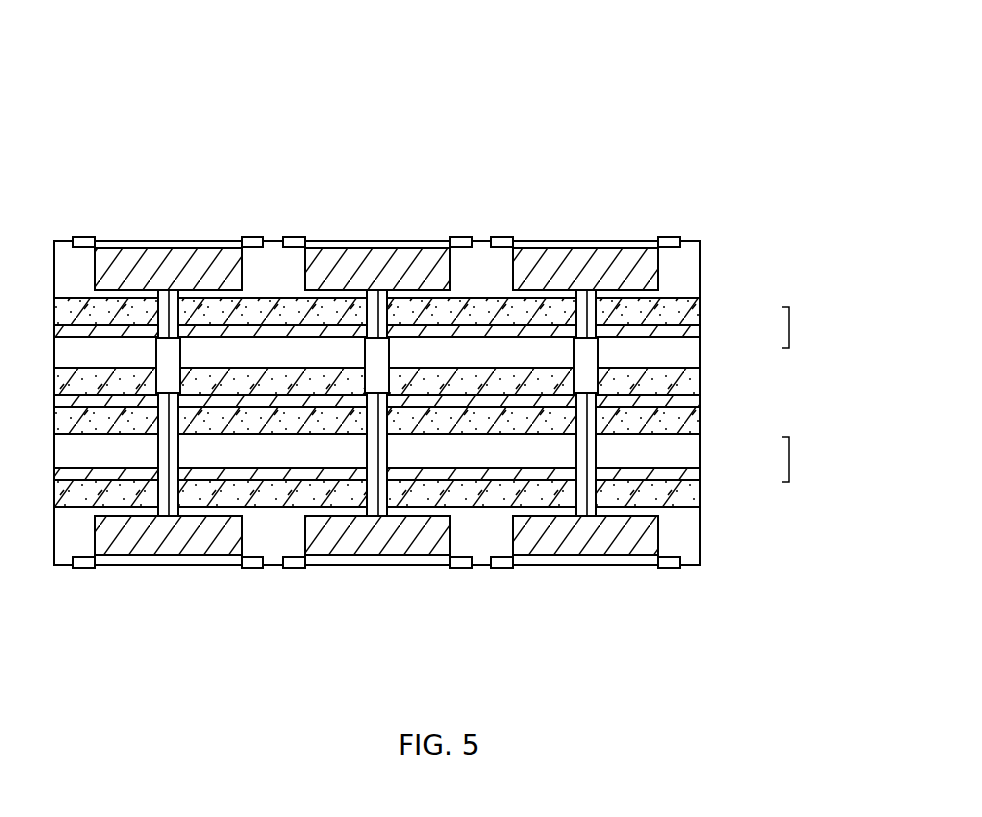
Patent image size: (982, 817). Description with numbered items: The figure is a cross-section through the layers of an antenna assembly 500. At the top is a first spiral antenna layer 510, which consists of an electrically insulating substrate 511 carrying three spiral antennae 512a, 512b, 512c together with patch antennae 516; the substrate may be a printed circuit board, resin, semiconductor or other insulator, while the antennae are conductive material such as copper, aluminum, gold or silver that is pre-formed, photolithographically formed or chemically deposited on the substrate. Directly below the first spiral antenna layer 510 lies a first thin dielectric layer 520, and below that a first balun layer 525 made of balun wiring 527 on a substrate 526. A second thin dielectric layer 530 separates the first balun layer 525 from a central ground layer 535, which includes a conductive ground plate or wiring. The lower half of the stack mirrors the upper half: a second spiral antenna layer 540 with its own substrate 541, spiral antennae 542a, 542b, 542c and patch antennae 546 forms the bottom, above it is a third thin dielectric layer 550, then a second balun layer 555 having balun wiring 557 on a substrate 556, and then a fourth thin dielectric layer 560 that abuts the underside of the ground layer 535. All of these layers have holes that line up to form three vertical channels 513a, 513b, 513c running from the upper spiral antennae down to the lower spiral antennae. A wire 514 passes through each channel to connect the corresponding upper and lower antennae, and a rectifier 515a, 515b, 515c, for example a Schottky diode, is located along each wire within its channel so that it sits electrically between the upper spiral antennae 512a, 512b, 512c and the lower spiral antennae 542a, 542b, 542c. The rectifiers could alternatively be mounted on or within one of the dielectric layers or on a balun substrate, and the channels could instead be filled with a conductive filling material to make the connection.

The antenna assembly 500 is at (574, 58).
The first spiral antenna layer 510 is at (710, 268).
The substrate 511 is at (272, 265).
The spiral antenna 512a is at (192, 265).
The spiral antenna 512b is at (392, 265).
The spiral antenna 512c is at (603, 265).
The channel 513a is at (179, 422).
The channel 513b is at (388, 422).
The channel 513c is at (597, 422).
The wire 514 is at (165, 313).
The rectifier 515a is at (182, 379).
The rectifier 515b is at (389, 379).
The rectifier 515c is at (599, 379).
The patch antennae 516 is at (694, 233).
The first thin dielectric layer 520 is at (700, 311).
The first balun layer 525 is at (808, 327).
The substrate 526 is at (700, 355).
The balun wiring 527 is at (700, 330).
The second thin dielectric layer 530 is at (700, 381).
The ground layer 535 is at (700, 408).
The second spiral antenna layer 540 is at (710, 537).
The substrate 541 is at (268, 535).
The spiral antenna 542a is at (178, 535).
The spiral antenna 542b is at (382, 535).
The spiral antenna 542c is at (598, 535).
The patch antennae 546 is at (692, 569).
The third thin dielectric layer 550 is at (700, 493).
The second balun layer 555 is at (808, 459).
The substrate 556 is at (700, 474).
The balun wiring 557 is at (700, 450).
The fourth thin dielectric layer 560 is at (700, 420).